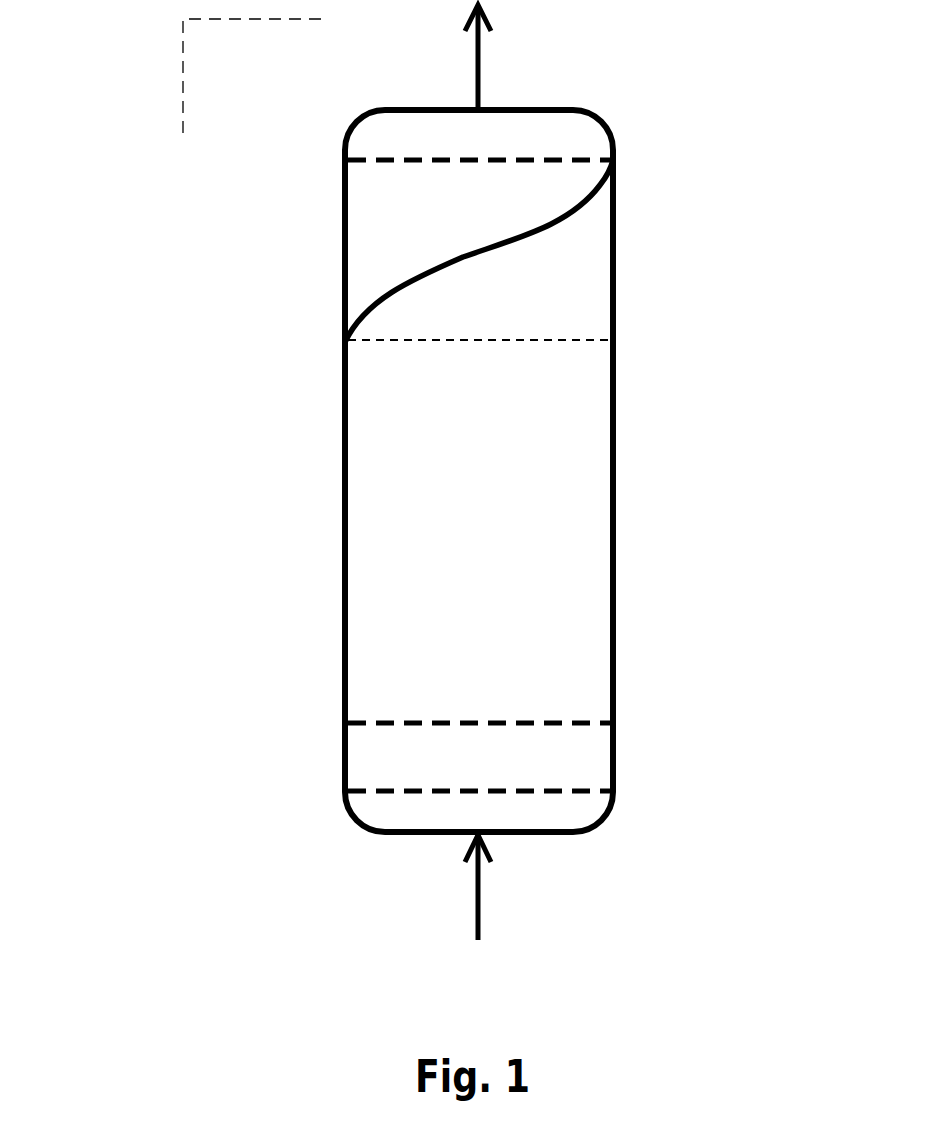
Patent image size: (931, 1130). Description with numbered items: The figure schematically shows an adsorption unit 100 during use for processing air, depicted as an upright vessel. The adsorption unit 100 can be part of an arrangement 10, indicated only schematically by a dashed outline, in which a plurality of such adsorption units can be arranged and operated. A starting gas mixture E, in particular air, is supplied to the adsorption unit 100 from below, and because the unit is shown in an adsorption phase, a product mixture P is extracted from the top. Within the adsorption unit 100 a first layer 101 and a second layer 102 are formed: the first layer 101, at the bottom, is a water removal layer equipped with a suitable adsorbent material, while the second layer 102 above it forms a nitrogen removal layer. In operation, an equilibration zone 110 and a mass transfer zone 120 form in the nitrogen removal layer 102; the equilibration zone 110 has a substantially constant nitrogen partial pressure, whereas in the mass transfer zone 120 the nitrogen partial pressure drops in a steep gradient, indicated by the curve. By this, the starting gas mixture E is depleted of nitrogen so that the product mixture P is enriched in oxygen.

The arrangement 10 is at (183, 52).
The adsorption unit 100 is at (682, 53).
The first layer 101 is at (637, 719).
The second layer 102 is at (637, 160).
The equilibration zone 110 is at (315, 345).
The mass transfer zone 120 is at (315, 160).
The product mixture P is at (481, 70).
The starting gas mixture E is at (481, 890).